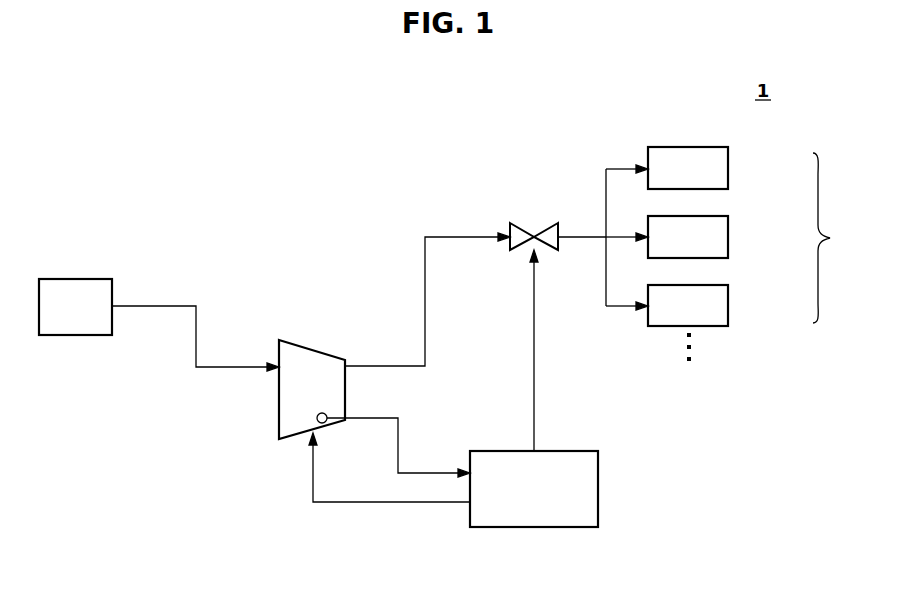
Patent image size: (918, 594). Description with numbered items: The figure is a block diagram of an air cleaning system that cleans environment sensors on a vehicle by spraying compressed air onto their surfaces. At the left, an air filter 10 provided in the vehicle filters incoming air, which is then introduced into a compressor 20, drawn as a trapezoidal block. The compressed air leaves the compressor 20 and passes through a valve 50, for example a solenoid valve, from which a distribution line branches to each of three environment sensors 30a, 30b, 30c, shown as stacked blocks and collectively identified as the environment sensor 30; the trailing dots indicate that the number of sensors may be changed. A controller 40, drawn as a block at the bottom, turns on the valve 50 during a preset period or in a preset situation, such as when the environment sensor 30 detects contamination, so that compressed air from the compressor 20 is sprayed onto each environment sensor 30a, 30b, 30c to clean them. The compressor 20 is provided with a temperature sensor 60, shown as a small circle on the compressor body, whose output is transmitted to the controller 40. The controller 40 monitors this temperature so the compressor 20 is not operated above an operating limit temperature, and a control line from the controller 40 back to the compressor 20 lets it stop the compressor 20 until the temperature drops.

The air filter 10 is at (76, 279).
The compressor 20 is at (279, 408).
The environment sensor 30 is at (836, 238).
The environment sensor 30a is at (728, 166).
The environment sensor 30b is at (728, 235).
The environment sensor 30c is at (728, 304).
The controller 40 is at (598, 490).
The valve 50 is at (531, 229).
The temperature sensor 60 is at (327, 415).